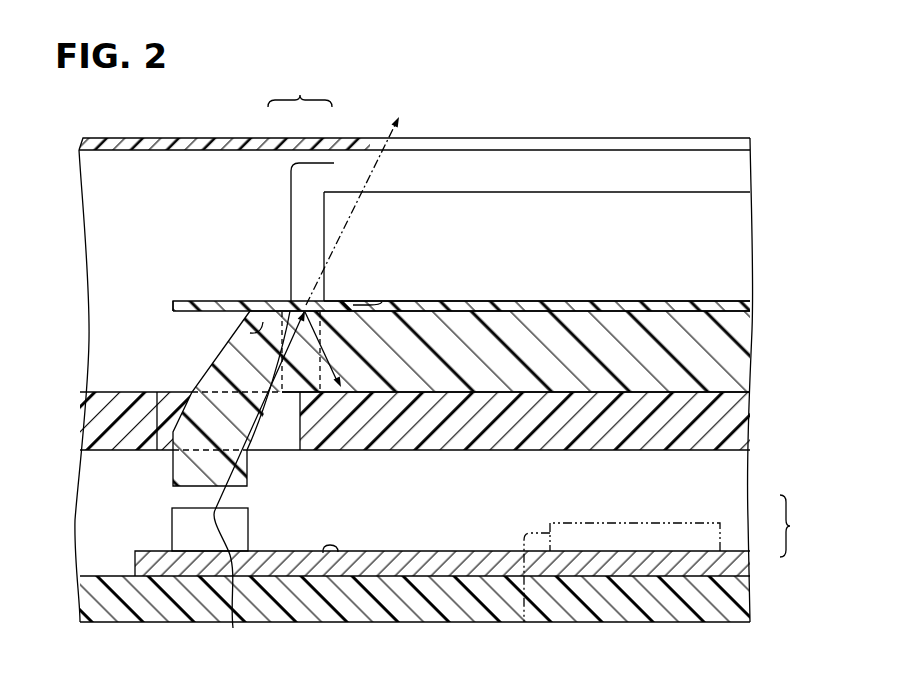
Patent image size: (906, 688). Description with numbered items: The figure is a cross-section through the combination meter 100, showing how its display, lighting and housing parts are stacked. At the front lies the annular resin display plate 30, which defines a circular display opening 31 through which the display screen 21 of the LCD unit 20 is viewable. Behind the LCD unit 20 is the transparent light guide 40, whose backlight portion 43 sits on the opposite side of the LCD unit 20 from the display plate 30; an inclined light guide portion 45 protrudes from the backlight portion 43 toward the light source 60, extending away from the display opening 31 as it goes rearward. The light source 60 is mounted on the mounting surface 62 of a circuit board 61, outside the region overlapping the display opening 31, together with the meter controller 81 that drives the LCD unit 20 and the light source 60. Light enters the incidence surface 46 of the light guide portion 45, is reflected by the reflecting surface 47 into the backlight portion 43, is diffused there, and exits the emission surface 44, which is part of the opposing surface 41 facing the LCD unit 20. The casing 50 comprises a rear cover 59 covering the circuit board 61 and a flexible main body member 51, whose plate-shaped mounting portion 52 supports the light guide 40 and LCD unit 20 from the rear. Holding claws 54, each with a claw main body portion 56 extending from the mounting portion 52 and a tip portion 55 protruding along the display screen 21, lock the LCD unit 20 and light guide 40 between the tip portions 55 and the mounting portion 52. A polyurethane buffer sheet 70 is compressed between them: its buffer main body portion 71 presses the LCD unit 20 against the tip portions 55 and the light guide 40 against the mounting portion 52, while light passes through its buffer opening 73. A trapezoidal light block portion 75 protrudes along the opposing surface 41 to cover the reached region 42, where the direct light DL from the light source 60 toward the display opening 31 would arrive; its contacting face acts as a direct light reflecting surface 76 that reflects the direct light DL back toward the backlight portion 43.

The combination meter 100 is at (90, 133).
The display plate 30 is at (738, 147).
The display screen 21 is at (723, 192).
The LCD unit 20 is at (728, 217).
The holding claw 54 is at (300, 91).
The claw main body portion 56 is at (292, 248).
The tip portion 55 is at (345, 192).
The display opening 31 is at (370, 138).
The buffer sheet 70 is at (748, 305).
The buffer main body portion 71 is at (340, 302).
The buffer opening 73 is at (382, 302).
The emission surface 44 is at (500, 311).
The opposing surface 41 is at (697, 310).
The backlight portion 43 is at (650, 358).
The light guide 40 is at (735, 330).
The mounting portion 52 is at (733, 393).
The reflecting surface 47 is at (222, 363).
The reached region 42 is at (293, 300).
The light block portion 75 is at (230, 304).
The direct light reflecting surface 76 is at (250, 333).
The light guide portion 45 is at (207, 420).
The main body member 51 is at (730, 440).
The incidence surface 46 is at (170, 493).
The light source 60 is at (205, 532).
The circuit board 61 is at (177, 565).
The rear cover 59 is at (727, 602).
The casing 50 is at (797, 526).
The mounting surface 62 is at (323, 553).
The direct light DL is at (277, 484).
The meter controller 81 is at (604, 590).